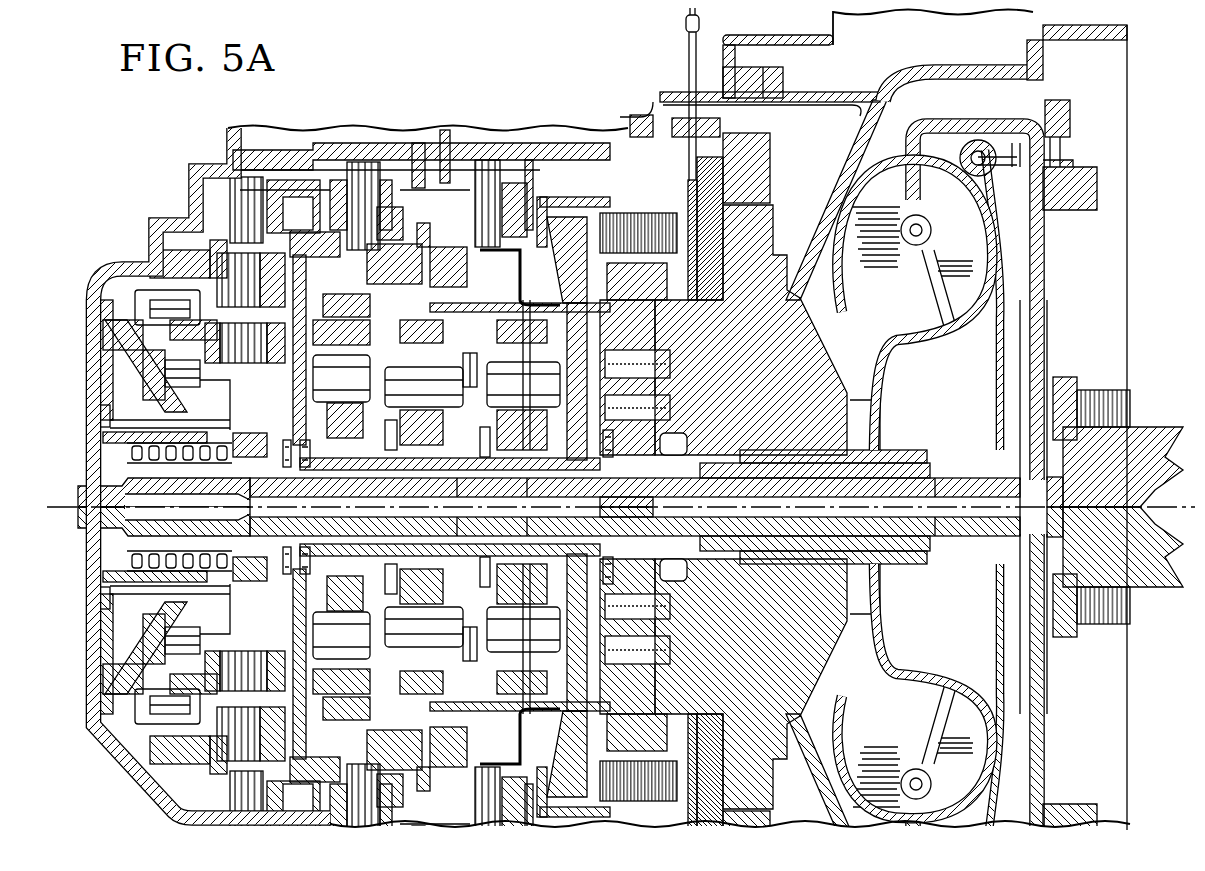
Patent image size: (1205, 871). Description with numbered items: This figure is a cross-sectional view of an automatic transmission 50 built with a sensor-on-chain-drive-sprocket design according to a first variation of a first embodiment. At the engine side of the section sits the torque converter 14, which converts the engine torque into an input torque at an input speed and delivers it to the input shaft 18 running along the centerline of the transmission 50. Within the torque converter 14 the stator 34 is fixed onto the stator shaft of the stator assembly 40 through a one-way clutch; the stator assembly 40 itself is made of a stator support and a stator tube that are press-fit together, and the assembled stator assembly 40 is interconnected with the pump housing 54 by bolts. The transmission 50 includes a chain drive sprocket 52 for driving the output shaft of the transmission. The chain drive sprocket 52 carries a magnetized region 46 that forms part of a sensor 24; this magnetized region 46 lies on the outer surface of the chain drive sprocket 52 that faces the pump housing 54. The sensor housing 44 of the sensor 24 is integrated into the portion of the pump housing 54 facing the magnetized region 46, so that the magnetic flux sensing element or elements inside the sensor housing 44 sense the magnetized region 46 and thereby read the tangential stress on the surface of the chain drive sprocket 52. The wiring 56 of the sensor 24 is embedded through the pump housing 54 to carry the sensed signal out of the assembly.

The torque converter 14 is at (906, 122).
The input shaft 18 is at (810, 528).
The sensor 24 is at (715, 292).
The stator 34 is at (913, 295).
The stator assembly 40 is at (753, 292).
The sensor housing 44 is at (713, 306).
The magnetized region 46 is at (728, 322).
The automatic transmission 50 is at (1100, 84).
The chain drive sprocket 52 is at (636, 278).
The pump housing 54 is at (722, 172).
The wiring 56 is at (747, 262).